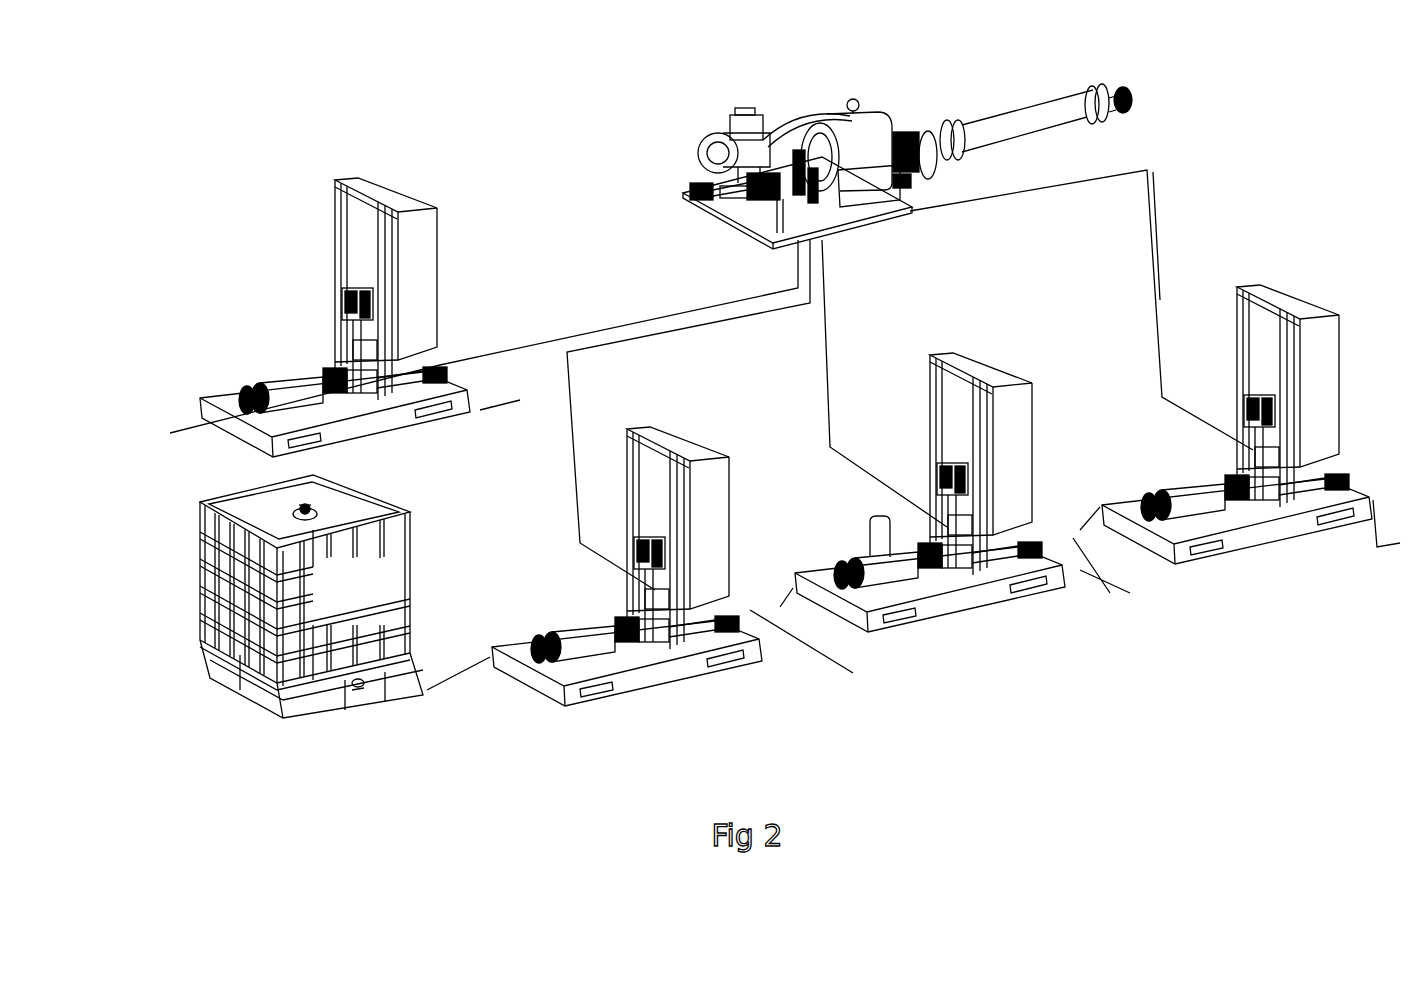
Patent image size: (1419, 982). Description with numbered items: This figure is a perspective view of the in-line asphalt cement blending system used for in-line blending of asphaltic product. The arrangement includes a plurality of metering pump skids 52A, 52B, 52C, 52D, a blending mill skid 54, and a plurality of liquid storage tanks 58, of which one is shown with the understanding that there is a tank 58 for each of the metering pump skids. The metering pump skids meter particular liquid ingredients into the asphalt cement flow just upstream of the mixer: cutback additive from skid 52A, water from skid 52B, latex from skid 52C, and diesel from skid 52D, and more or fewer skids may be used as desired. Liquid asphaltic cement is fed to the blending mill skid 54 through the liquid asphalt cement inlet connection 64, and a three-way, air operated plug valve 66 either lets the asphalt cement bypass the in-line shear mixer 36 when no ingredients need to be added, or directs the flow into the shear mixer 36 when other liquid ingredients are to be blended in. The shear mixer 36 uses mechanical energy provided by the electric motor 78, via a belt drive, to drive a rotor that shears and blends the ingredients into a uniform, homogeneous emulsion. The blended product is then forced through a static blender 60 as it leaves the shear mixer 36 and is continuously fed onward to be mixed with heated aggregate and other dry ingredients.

The metering pump skid 52A is at (278, 235).
The metering pump skid 52B is at (633, 693).
The metering pump skid 52C is at (975, 620).
The metering pump skid 52D is at (1297, 550).
The blending mill skid 54 is at (852, 164).
The in-line shear mixer 36 is at (880, 118).
The static blender 60 is at (1003, 107).
The electric motor 78 is at (700, 153).
The liquid asphalt cement inlet connection 64 is at (685, 202).
The 3-way, air operated, plug valve 66 is at (717, 210).
The liquid storage tank 58 is at (200, 503).